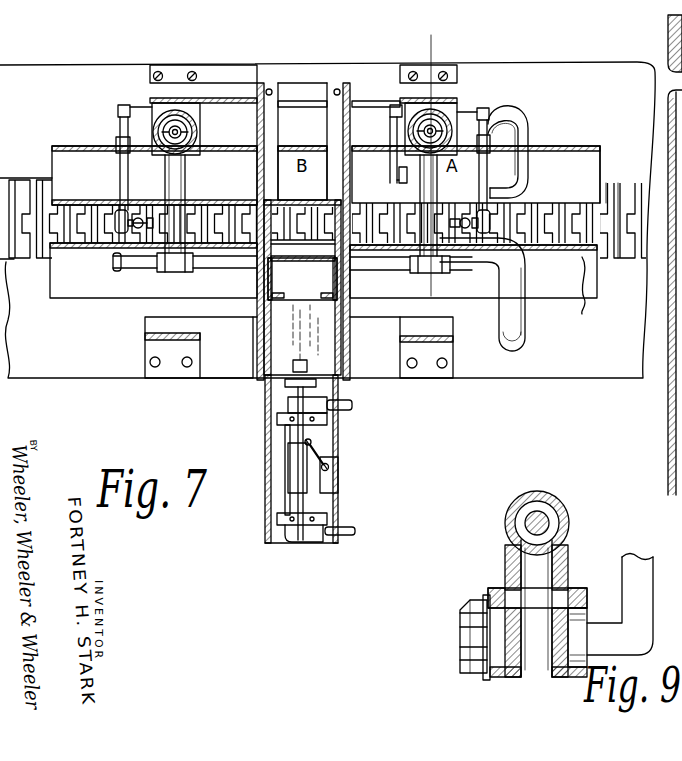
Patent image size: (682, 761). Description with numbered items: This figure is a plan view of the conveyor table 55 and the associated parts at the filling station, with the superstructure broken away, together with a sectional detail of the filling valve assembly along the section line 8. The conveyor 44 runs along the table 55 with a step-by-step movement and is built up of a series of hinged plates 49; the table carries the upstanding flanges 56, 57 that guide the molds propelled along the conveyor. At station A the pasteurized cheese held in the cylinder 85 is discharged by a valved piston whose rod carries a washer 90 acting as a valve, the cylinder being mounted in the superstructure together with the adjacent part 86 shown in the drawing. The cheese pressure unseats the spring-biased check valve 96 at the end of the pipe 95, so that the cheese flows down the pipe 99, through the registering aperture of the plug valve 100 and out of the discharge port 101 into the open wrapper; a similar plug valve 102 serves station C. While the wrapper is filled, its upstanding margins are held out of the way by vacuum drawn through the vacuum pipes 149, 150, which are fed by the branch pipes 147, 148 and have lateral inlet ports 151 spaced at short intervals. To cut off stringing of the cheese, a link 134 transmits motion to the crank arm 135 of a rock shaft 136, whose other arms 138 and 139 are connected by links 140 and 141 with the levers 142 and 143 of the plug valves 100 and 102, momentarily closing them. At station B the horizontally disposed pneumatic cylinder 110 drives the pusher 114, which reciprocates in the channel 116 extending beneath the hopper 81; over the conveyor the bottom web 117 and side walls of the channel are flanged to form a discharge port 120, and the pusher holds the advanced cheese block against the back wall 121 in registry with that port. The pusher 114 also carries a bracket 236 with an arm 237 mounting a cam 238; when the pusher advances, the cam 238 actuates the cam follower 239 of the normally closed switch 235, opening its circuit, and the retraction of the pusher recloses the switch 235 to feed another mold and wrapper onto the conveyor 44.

In FIG. 7, the section line 8- 8 is at (425, 47).
In FIG. 7, the conveyor 44 is at (620, 195).
In FIG. 7, the plates 49 is at (606, 183).
In FIG. 7, the conveyor table 55 is at (618, 350).
In FIG. 7, the upstanding flange 56 is at (577, 194).
In FIG. 7, the upstanding flange 57 is at (594, 291).
In FIG. 7, the hopper 81 is at (265, 281).
In FIG. 7, the cylinder 85 is at (477, 123).
In FIG. 7, the roller 86 is at (195, 143).
In FIG. 7, the washer 90 is at (160, 118).
In FIG. 7, the pipe 95 is at (437, 190).
In FIG. 9, the pipe 95 is at (506, 502).
In FIG. 9, the check valve 96 is at (517, 525).
In FIG. 9, the pipe 99 is at (507, 556).
In FIG. 7, the plug valve 100 is at (466, 230).
In FIG. 9, the plug valve 100 is at (497, 596).
In FIG. 9, the discharge port 101 is at (534, 660).
In FIG. 7, the plug valve 102 is at (138, 228).
In FIG. 7, the pneumatic cylinder 110 is at (285, 440).
In FIG. 7, the pusher 114 is at (263, 372).
In FIG. 7, the channel 116 is at (266, 412).
In FIG. 7, the bottom web 117 is at (330, 406).
In FIG. 7, the discharge port 120 is at (302, 278).
In FIG. 7, the back wall 121 is at (310, 238).
In FIG. 7, the link 134 is at (400, 187).
In FIG. 7, the crank arm 135 is at (392, 124).
In FIG. 7, the rock shaft 136 is at (292, 112).
In FIG. 7, the arm 138 is at (527, 124).
In FIG. 7, the arm 139 is at (118, 124).
In FIG. 7, the link 140 is at (490, 173).
In FIG. 7, the link 141 is at (118, 166).
In FIG. 7, the lever 142 is at (470, 228).
In FIG. 9, the lever 142 is at (666, 540).
In FIG. 7, the lever 143 is at (135, 228).
In FIG. 7, the branch pipe 147 is at (518, 316).
In FIG. 7, the branch pipe 148 is at (528, 126).
In FIG. 7, the vacuum pipe 149 is at (207, 274).
In FIG. 7, the vacuum pipe 150 is at (222, 188).
In FIG. 7, the lateral inlet ports 151 is at (172, 248).
In FIG. 7, the switch 235 is at (334, 484).
In FIG. 7, the bracket 236 is at (320, 383).
In FIG. 7, the arm 237 is at (310, 410).
In FIG. 7, the cam 238 is at (310, 479).
In FIG. 7, the cam follower 239 is at (335, 443).